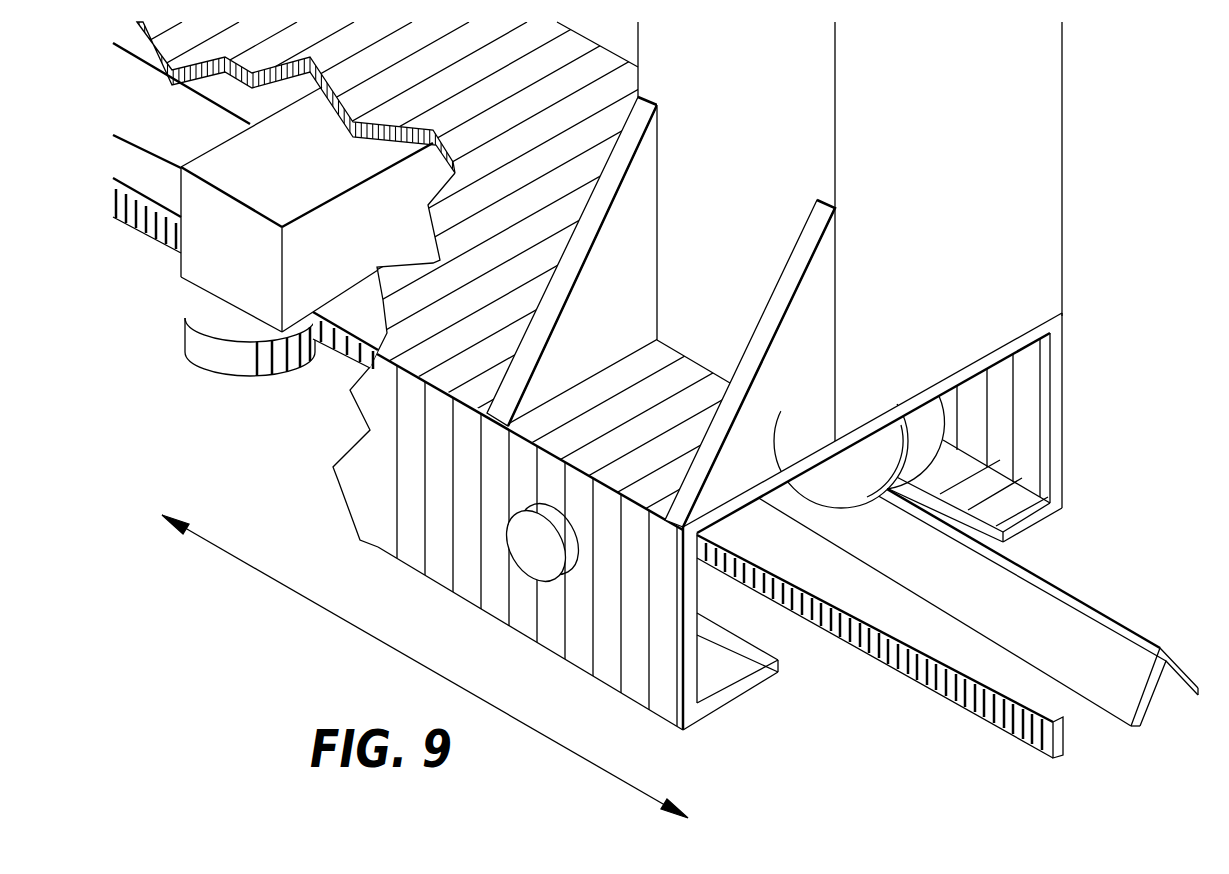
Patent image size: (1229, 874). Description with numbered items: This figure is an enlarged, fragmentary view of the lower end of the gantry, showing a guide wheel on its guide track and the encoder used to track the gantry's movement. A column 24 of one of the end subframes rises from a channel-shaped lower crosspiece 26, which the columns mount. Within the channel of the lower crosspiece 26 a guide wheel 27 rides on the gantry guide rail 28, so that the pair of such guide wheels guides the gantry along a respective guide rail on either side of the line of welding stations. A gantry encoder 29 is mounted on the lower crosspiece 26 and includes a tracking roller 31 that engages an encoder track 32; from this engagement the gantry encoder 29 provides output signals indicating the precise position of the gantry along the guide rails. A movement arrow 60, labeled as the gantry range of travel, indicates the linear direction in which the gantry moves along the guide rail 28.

The column 24 is at (939, 178).
The lower crosspiece 26 is at (859, 397).
The guide wheel 27 is at (872, 508).
The gantry guide rail 28 is at (1102, 614).
The gantry encoder 29 is at (301, 178).
The tracking roller 31 is at (244, 378).
The encoder track 32 is at (343, 352).
The movement arrows 60 is at (316, 605).